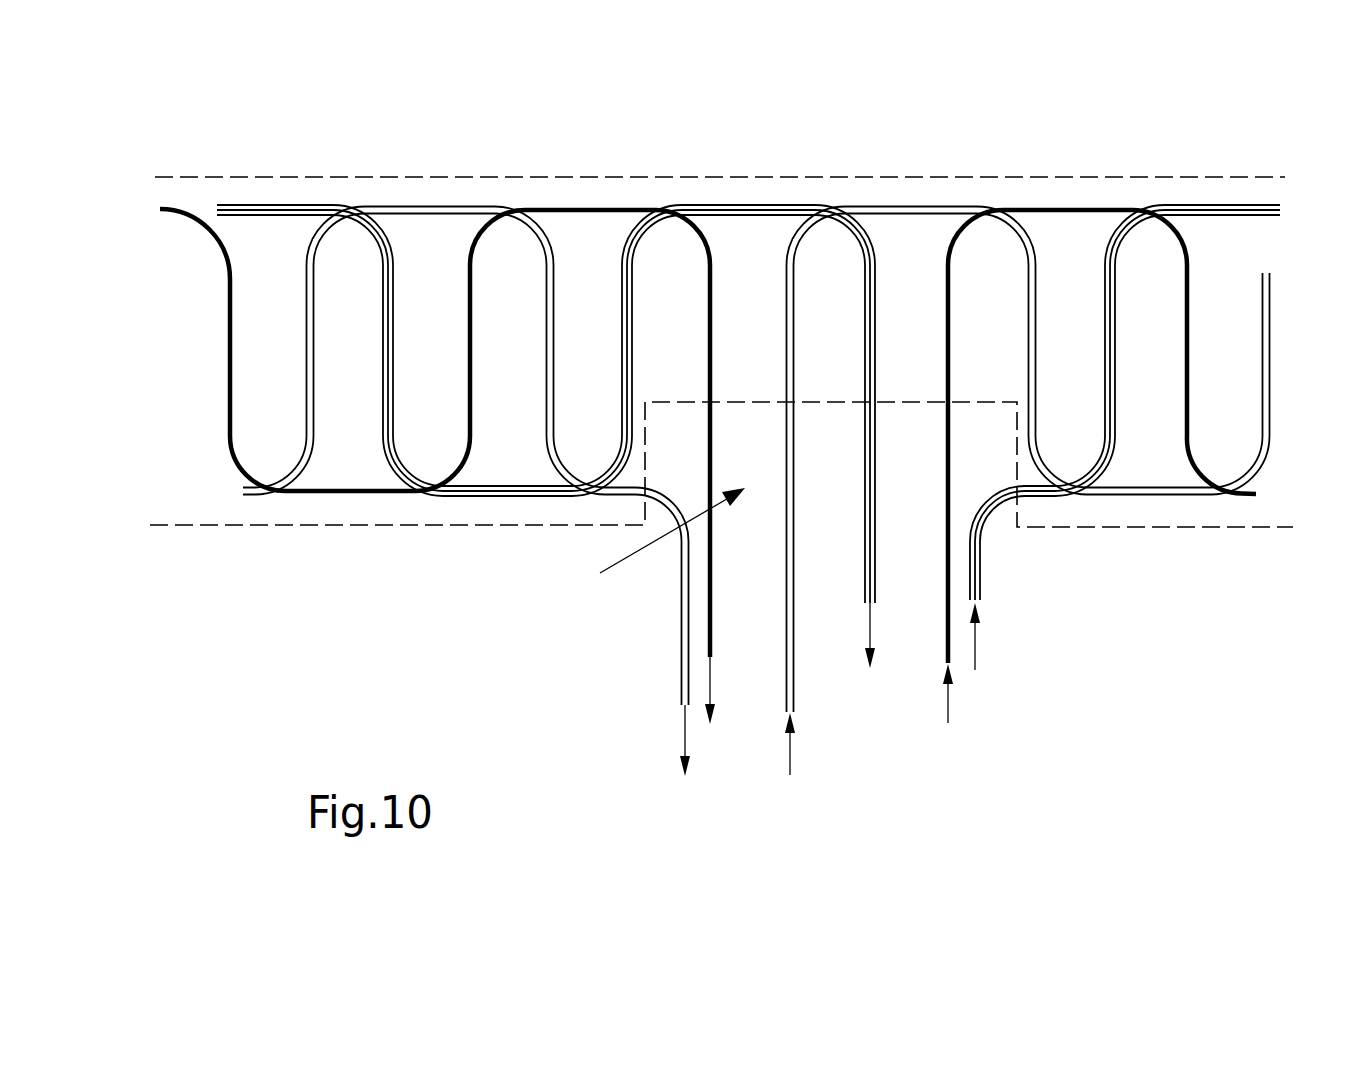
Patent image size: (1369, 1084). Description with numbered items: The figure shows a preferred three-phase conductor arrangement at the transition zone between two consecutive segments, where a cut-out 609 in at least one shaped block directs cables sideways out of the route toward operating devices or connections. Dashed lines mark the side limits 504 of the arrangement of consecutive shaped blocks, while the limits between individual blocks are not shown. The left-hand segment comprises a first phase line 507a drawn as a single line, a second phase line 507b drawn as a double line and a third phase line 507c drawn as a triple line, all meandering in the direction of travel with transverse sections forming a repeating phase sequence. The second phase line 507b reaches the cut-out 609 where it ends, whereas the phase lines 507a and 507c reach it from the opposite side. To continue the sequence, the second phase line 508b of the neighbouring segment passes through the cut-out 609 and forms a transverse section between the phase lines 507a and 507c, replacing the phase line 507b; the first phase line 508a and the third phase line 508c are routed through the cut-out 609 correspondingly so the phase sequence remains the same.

The side limits 504 is at (1155, 176).
The first phase line 507a is at (227, 342).
The second phase line 507b is at (315, 357).
The third phase line 507c is at (395, 363).
The first phase line 508a is at (1083, 215).
The second phase line 508b is at (1033, 367).
The third phase line 508c is at (1113, 405).
The cut-out 609 is at (646, 543).